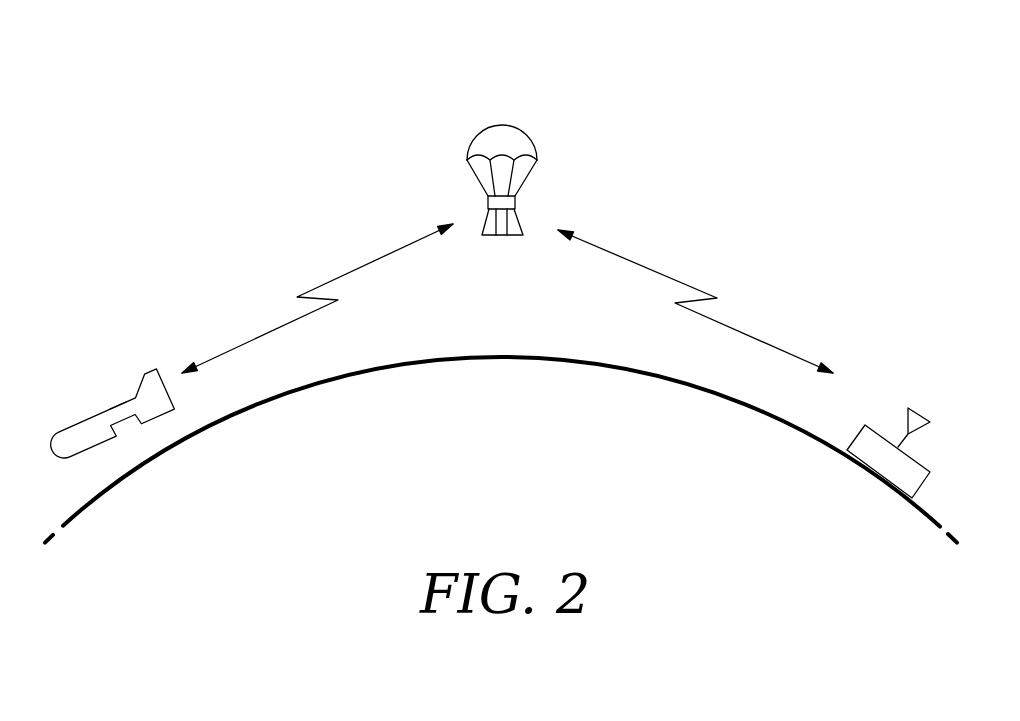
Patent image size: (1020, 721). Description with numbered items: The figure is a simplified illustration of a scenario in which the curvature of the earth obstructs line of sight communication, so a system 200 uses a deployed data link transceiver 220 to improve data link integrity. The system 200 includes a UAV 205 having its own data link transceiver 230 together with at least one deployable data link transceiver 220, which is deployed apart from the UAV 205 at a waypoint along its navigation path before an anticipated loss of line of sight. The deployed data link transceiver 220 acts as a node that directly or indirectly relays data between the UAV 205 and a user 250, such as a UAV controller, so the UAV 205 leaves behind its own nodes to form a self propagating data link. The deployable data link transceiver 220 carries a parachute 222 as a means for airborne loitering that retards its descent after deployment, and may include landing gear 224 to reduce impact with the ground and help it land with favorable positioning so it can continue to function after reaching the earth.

The system 200 is at (288, 196).
The UAV 205 is at (73, 437).
The deployable data link transceiver 220 is at (513, 203).
The parachute 222 is at (482, 138).
The landing gear 224 is at (493, 236).
The data link transceiver 230 is at (117, 395).
The user 250 is at (876, 430).